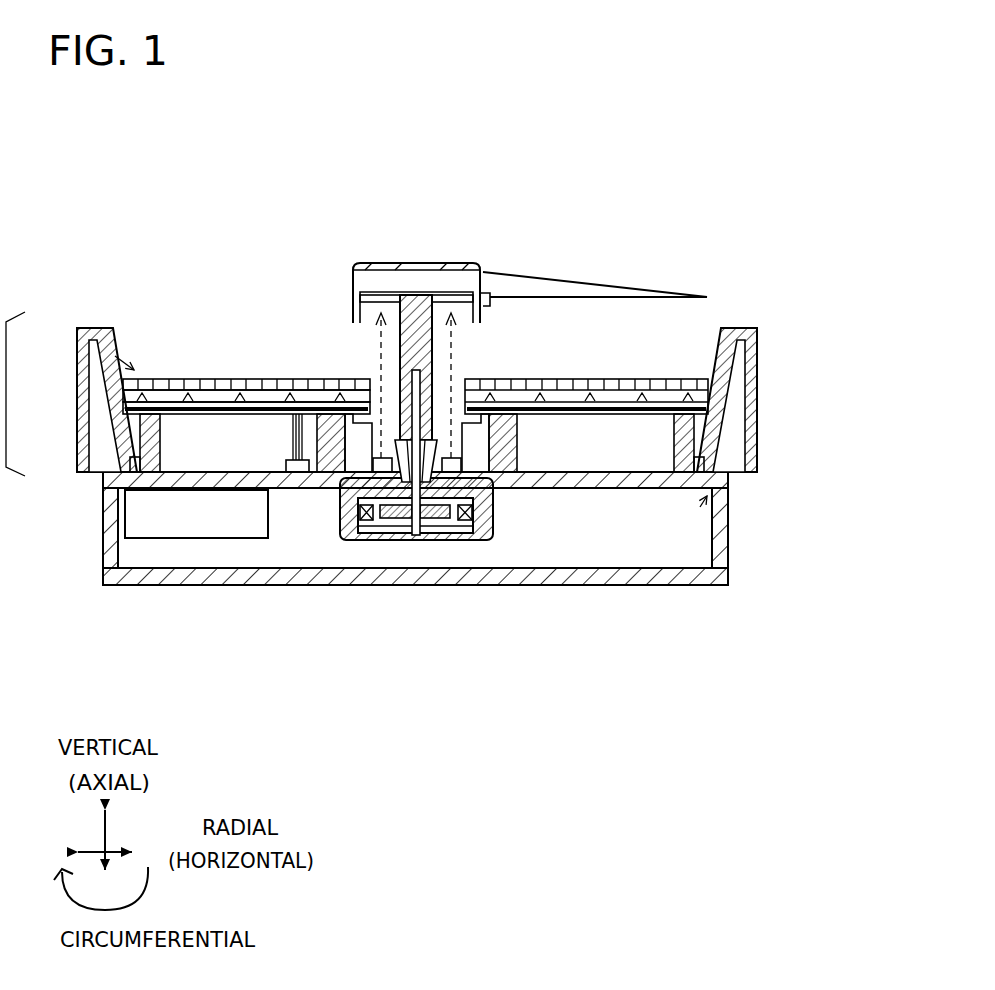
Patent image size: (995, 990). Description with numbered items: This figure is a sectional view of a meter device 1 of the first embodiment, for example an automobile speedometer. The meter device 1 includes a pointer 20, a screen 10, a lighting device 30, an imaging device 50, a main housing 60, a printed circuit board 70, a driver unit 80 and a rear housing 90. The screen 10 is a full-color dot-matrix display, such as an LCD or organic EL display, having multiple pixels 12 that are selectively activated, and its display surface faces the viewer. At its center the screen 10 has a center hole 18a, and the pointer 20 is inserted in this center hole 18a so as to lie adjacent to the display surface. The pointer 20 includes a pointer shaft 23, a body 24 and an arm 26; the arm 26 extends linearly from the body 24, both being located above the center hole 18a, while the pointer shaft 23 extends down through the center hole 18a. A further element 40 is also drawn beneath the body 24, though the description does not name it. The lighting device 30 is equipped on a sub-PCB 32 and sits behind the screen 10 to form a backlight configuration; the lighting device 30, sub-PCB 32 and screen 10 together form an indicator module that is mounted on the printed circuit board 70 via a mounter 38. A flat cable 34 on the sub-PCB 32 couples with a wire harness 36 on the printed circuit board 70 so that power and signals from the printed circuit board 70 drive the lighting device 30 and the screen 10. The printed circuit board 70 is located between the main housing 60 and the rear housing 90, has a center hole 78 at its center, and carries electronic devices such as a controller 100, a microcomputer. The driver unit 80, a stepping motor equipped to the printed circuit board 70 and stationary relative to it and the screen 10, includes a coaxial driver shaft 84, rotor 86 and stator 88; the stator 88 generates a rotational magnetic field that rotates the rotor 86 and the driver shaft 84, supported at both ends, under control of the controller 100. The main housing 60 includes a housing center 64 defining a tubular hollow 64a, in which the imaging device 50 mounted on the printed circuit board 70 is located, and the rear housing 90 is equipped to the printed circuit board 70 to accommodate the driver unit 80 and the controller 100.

The meter device 1 is at (749, 203).
The screen 10 is at (233, 366).
The pixels 12 is at (89, 362).
The center hole 18a is at (378, 365).
The pointer 20 is at (462, 242).
The pointer shaft 23 is at (466, 330).
The body 24 is at (368, 263).
The arm 26 is at (540, 270).
The lighting device 30 is at (130, 396).
The sub-PCB 32 is at (135, 412).
The flat cable 34 is at (294, 443).
The wire harness 36 is at (289, 467).
The mounter 38 is at (140, 440).
The spacer 40 is at (355, 283).
The imaging device 50 is at (350, 500).
The main housing 60 is at (751, 484).
The housing center 64 is at (457, 410).
The tubular hollow 64a is at (375, 383).
The printed circuit board 70 is at (714, 518).
The center hole 78 is at (488, 522).
The driver unit 80 is at (484, 547).
The driver shaft 84 is at (388, 538).
The rotor 86 is at (440, 540).
The stator 88 is at (473, 555).
The rear housing 90 is at (707, 590).
The controller 100 is at (150, 545).